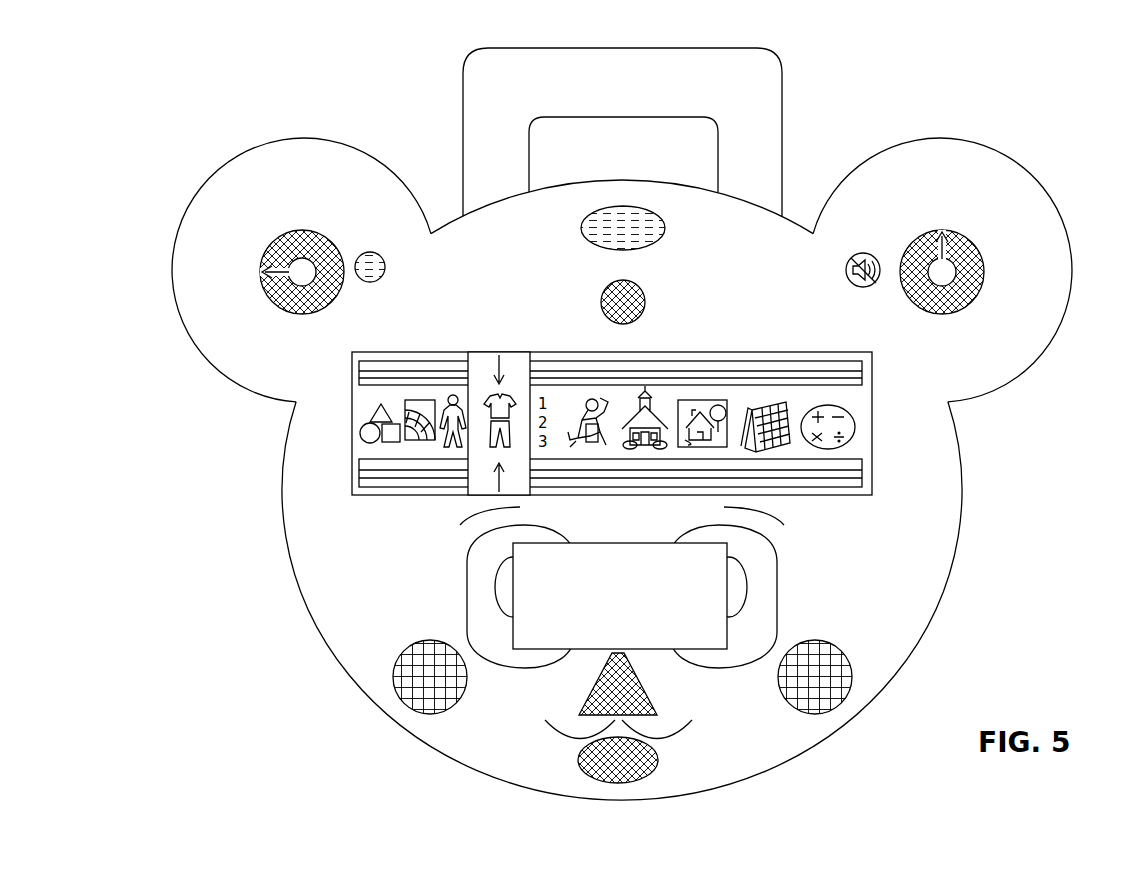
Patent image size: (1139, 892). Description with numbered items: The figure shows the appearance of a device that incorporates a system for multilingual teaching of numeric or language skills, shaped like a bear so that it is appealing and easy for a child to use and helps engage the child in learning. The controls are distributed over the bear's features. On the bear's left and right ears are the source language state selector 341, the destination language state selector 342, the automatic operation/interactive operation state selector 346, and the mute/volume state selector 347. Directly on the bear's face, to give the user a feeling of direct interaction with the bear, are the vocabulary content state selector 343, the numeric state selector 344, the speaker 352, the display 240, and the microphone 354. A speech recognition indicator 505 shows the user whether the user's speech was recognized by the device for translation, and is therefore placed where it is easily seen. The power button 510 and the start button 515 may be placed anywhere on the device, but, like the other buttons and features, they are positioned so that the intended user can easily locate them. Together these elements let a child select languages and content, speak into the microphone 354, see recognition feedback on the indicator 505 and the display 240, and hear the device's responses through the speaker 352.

The source language state selector 341 is at (270, 243).
The destination language state selector 342 is at (978, 246).
The vocabulary content state selector 343 is at (342, 468).
The numeric state selector 344 is at (485, 462).
The automatic operation/interactive operation state selector 346 is at (370, 250).
The mute/volume state selector 347 is at (862, 252).
The speaker 352 is at (394, 678).
The microphone 354 is at (587, 687).
The speech recognition indicator 505 is at (646, 299).
The power button 510 is at (581, 228).
The start button 515 is at (663, 758).
The display 240 is at (727, 588).